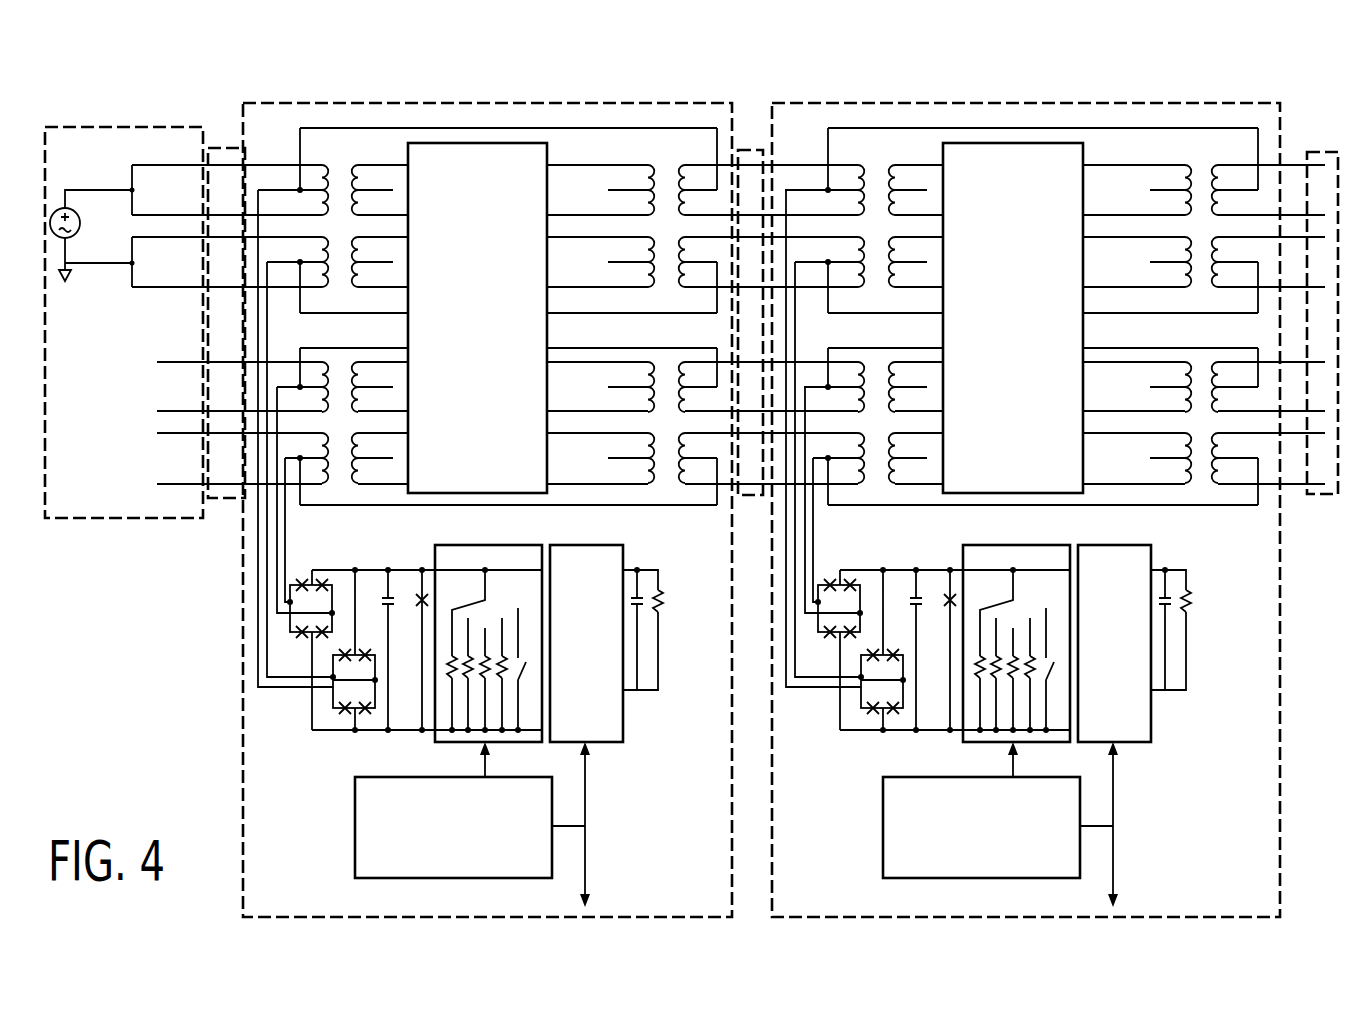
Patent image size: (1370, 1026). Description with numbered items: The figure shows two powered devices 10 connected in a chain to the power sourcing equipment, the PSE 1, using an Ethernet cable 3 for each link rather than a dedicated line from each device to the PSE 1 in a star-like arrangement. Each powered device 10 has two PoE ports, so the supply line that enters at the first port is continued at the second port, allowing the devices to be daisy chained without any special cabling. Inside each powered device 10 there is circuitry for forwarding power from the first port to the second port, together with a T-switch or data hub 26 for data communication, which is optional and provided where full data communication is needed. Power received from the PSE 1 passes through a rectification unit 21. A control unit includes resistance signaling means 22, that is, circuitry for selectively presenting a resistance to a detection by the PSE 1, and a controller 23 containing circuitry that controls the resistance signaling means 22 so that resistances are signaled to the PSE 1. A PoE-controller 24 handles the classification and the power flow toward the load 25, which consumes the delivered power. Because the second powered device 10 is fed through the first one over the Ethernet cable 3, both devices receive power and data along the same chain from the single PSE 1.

The PSE 1 is at (108, 127).
The Ethernet cable 3 is at (225, 148).
The powered device 10 is at (424, 102).
The rectification unit 21 is at (310, 741).
The resistance signaling means 22 is at (437, 565).
The controller 23 is at (355, 832).
The PoE-controller 24 is at (625, 745).
The load 25 is at (665, 629).
The T-switch or data hub 26 is at (497, 143).